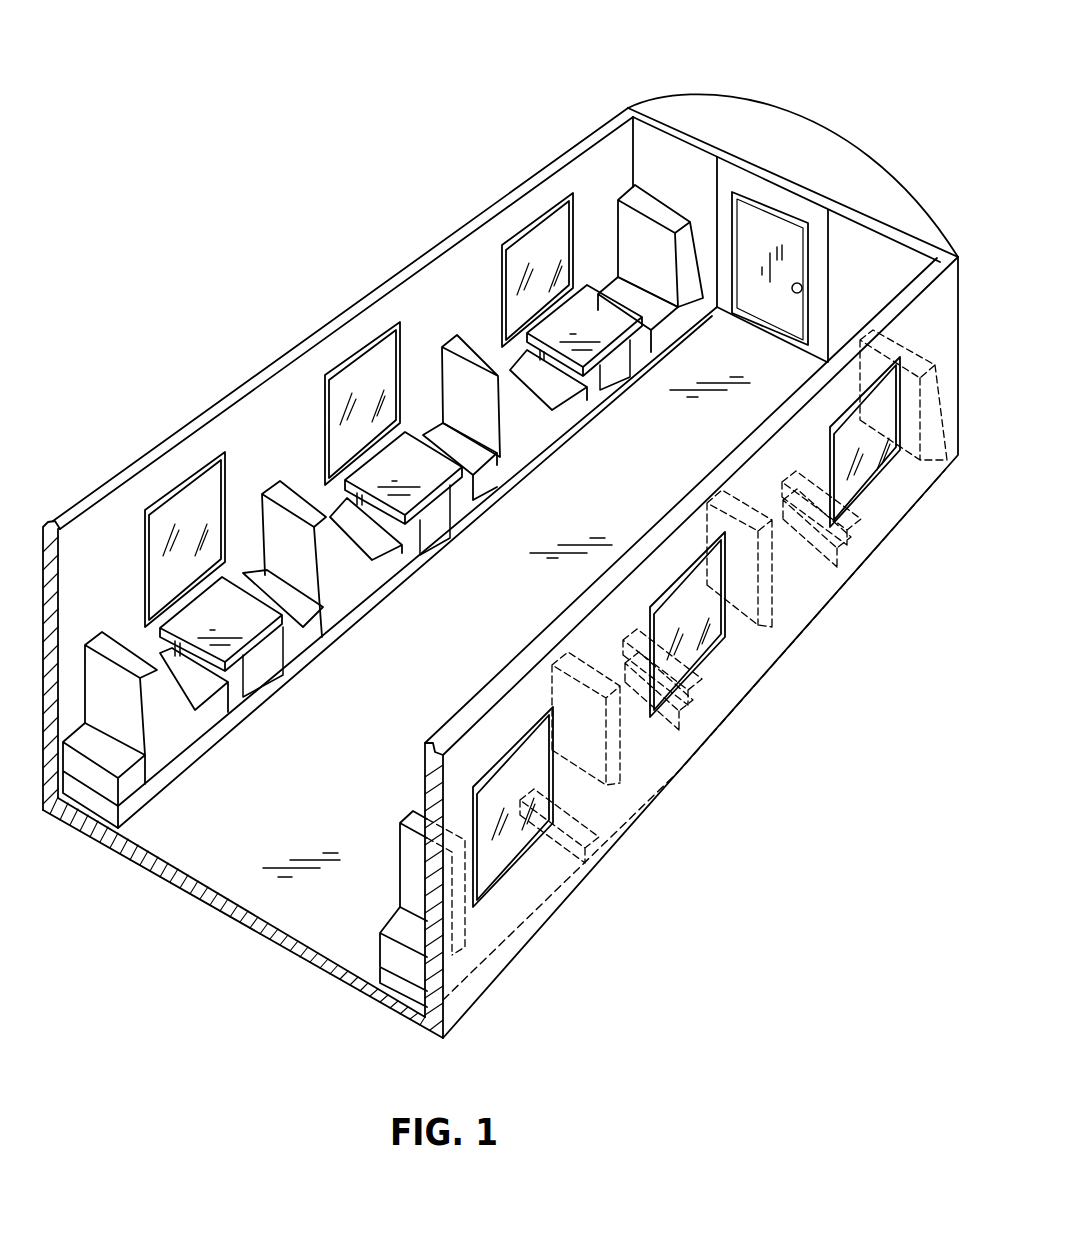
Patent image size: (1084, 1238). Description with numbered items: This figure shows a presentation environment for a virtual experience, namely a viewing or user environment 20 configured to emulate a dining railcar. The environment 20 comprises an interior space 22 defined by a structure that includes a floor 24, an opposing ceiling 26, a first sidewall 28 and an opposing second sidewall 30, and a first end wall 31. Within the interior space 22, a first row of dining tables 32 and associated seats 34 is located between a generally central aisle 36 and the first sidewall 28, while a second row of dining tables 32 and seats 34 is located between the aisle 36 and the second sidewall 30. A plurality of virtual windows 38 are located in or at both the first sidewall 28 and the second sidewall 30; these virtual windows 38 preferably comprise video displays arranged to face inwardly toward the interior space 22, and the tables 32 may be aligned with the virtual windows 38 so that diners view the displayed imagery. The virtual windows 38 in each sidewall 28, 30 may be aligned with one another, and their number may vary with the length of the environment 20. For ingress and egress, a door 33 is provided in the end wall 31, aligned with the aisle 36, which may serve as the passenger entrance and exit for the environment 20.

The user environment 20 is at (462, 101).
The interior space 22 is at (470, 278).
The floor 24 is at (603, 490).
The ceiling 26 is at (721, 117).
The first sidewall 28 is at (258, 408).
The second sidewall 30 is at (653, 757).
The first end wall 31 is at (873, 245).
The dining table 32 is at (447, 488).
The door 33 is at (779, 233).
The seat 34 is at (373, 545).
The aisle 36 is at (258, 816).
The virtual window 38 is at (490, 870).